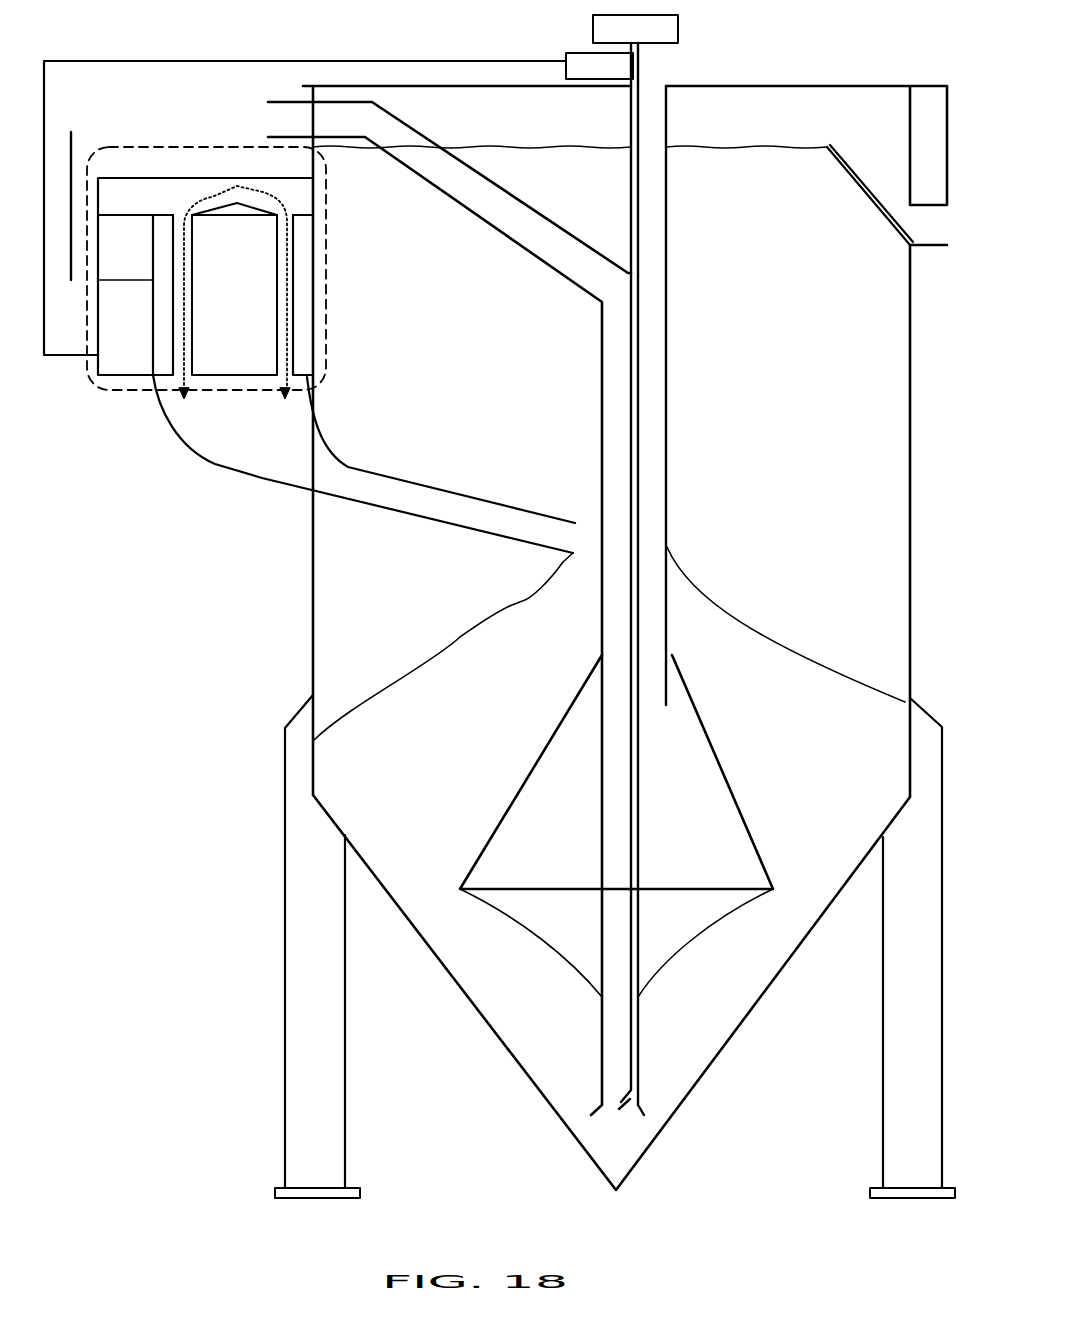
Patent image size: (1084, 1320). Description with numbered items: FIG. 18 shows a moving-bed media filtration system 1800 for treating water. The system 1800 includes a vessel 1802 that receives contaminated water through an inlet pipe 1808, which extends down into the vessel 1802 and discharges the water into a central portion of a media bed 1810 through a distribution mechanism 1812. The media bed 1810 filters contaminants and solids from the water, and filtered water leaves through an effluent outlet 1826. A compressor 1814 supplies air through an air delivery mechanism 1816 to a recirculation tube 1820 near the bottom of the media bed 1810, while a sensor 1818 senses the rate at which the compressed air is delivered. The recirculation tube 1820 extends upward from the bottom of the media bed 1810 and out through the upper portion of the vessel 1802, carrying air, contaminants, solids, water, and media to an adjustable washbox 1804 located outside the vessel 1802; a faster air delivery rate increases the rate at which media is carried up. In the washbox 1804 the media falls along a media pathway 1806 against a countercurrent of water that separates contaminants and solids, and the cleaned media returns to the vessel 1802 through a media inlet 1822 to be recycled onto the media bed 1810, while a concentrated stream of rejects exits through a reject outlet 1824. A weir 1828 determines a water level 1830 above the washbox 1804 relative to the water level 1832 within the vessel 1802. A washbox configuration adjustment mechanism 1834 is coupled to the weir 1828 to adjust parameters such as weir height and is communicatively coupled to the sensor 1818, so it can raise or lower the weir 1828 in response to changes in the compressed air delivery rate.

The moving-bed media filtration system 1800 is at (843, 63).
The vessel 1802 is at (721, 82).
The adjustable washbox 1804 is at (228, 147).
The media pathway 1806 is at (237, 187).
The inlet pipe 1808 is at (668, 226).
The media bed 1810 is at (476, 622).
The distribution mechanism 1812 is at (693, 801).
The compressor 1814 is at (658, 40).
The air delivery mechanism 1816 is at (641, 80).
The sensor 1818 is at (623, 77).
The recirculation tube 1820 is at (513, 193).
The media inlet 1822 is at (417, 484).
The reject outlet 1824 is at (87, 156).
The effluent outlet 1826 is at (958, 233).
The weir 1828 is at (102, 177).
The water level 1830 is at (243, 177).
The water level 1832 is at (715, 148).
The washbox configuration adjustment mechanism 1834 is at (125, 270).